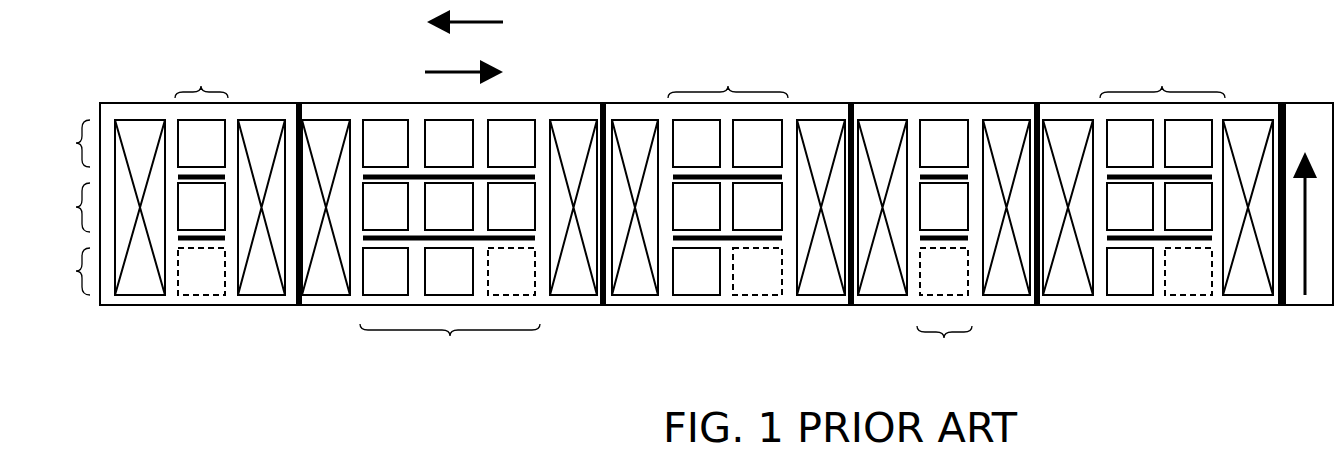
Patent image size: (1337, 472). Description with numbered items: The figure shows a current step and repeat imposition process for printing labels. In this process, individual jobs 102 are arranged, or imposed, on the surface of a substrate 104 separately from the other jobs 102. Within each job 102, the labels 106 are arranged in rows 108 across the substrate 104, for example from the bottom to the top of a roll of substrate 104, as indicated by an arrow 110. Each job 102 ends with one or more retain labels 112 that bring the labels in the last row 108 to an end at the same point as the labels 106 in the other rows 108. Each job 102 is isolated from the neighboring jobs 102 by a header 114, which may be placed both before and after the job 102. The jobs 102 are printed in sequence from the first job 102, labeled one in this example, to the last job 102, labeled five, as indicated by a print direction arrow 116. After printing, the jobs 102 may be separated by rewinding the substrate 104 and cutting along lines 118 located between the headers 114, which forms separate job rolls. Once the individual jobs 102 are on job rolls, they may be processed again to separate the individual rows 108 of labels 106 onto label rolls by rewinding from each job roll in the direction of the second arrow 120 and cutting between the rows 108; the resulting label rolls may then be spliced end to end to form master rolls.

The job 102 is at (700, 215).
The substrate 104 is at (1327, 103).
The label 106 is at (227, 120).
The row 108 is at (59, 207).
The arrow 110 is at (1305, 305).
The retain label 112 is at (208, 305).
The header 114 is at (880, 120).
The print direction arrow 116 is at (472, 25).
The line 118 is at (301, 108).
The second arrow 120 is at (172, 238).